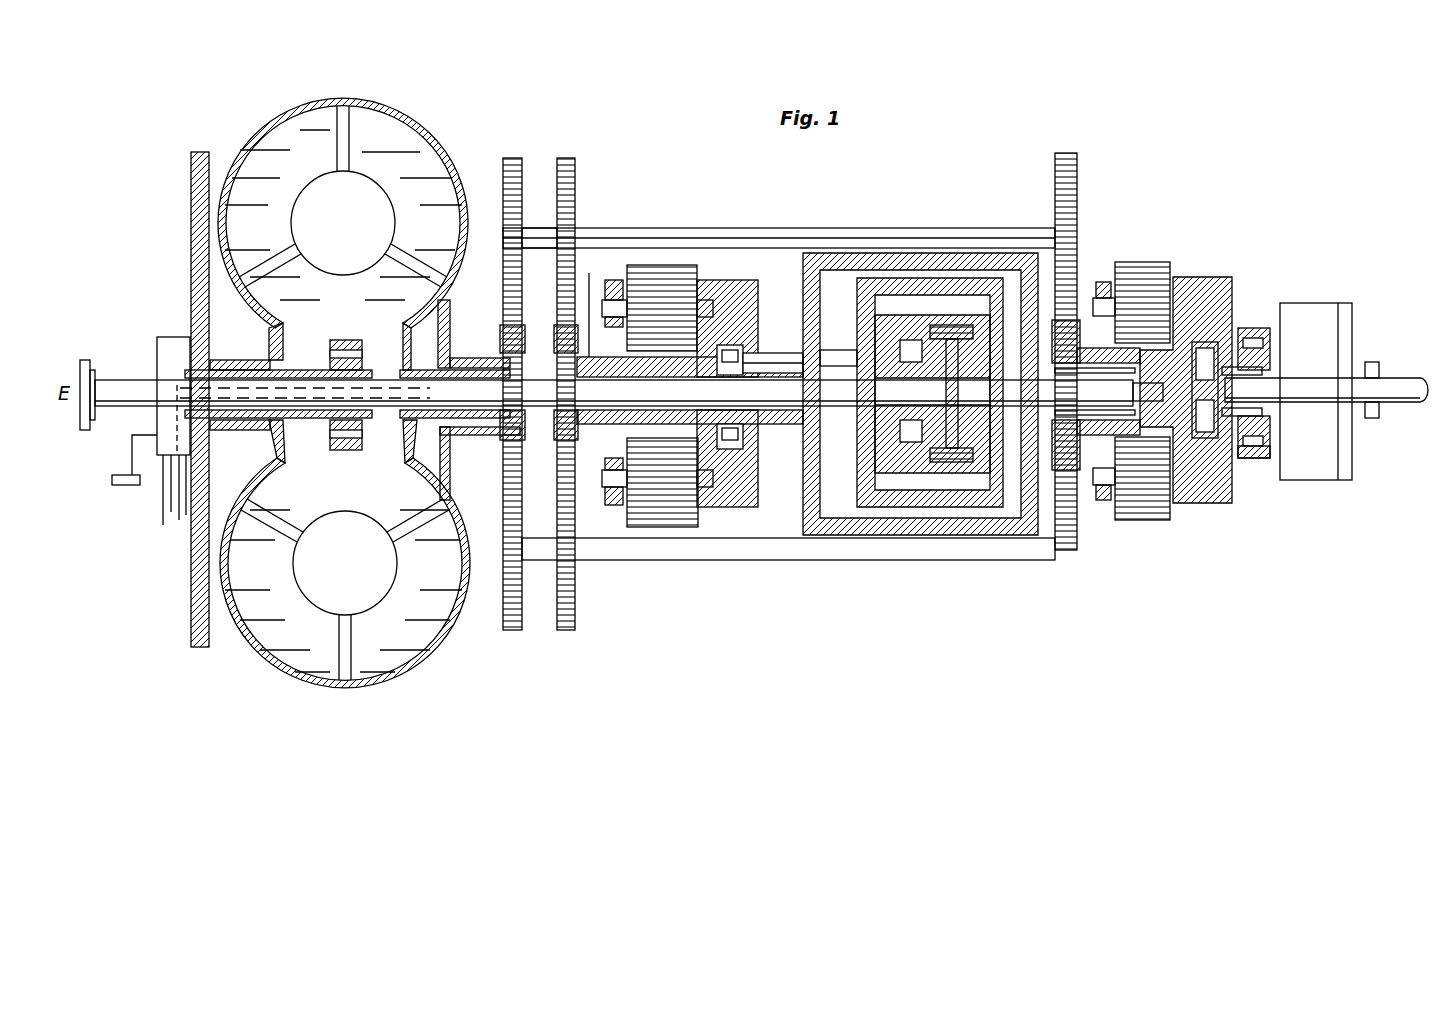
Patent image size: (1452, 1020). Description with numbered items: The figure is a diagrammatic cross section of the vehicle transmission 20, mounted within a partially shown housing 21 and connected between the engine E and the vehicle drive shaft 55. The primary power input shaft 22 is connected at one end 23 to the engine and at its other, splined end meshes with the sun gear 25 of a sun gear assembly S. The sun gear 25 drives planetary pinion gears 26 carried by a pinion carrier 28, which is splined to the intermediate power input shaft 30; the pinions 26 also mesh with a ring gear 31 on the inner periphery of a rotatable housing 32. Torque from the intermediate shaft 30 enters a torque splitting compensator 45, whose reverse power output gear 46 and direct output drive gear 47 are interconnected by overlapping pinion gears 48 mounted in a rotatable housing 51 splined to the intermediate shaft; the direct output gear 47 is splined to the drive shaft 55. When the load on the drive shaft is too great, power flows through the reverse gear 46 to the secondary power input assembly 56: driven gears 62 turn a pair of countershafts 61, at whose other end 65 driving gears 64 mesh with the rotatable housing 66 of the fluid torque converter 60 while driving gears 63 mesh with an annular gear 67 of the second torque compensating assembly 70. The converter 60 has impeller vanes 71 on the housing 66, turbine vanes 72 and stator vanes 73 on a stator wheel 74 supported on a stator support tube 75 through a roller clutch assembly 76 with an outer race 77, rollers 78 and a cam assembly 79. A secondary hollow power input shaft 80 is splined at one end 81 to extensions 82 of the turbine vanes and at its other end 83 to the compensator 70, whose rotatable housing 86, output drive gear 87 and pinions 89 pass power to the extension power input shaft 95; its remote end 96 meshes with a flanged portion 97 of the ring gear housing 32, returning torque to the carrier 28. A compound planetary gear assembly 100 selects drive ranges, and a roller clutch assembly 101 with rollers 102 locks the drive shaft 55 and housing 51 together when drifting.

The transmission 20 is at (798, 598).
The transmission housing 21 is at (193, 612).
The primary power input shaft 22 is at (123, 420).
The end of primary input shaft 23 is at (95, 376).
The sun gear 25 is at (945, 380).
The planetary pinion gears 26 is at (940, 480).
The pinion carrier 28 is at (985, 360).
The intermediate power input shaft 30 is at (1047, 420).
The ring gear 31 is at (958, 515).
The rotatable housing 32 is at (935, 330).
The torque splitting compensator 45 is at (1220, 274).
The reverse power output gear 46 is at (1105, 355).
The direct output drive gear 47 is at (1205, 440).
The pinion gears 48 is at (1142, 262).
The rotatable housing 51 is at (1190, 504).
The vehicle drive shaft 55 is at (1268, 388).
The secondary power input assembly 56 is at (588, 220).
The fluid torque converter 60 is at (347, 192).
The countershafts 61 is at (795, 229).
The driven gears 62 is at (1077, 155).
The driving gears 63 is at (570, 157).
The driving gears 64 is at (515, 157).
The end of countershaft 65 is at (535, 222).
The rotatable housing of torque converter 66 is at (432, 150).
The annular gear 67 is at (597, 304).
The second differential torque compensating assembly 70 is at (767, 288).
The impeller vanes 71 is at (270, 160).
The turbine vanes 72 is at (385, 135).
The stator vanes 73 is at (320, 300).
The stator wheel 74 is at (357, 342).
The stator support tube 75 is at (212, 370).
The roller clutch assembly 76 is at (322, 420).
The outer race 77 is at (268, 445).
The rollers 78 is at (455, 355).
The cam assembly 79 is at (345, 420).
The secondary hollow power input shaft 80 is at (490, 370).
The end of secondary power input shaft 81 is at (408, 452).
The extensions of turbine vanes 82 is at (445, 455).
The end of secondary power input shaft 83 is at (680, 370).
The rotatable housing 86 is at (758, 503).
The output drive gear 87 is at (730, 345).
The pinions 89 is at (672, 528).
The secondary extension power input shaft 95 is at (775, 428).
The remote end of extension power input shaft 96 is at (822, 358).
The flanged portion 97 is at (838, 350).
The compound planetary gear assembly 100 is at (1346, 300).
The roller clutch assembly 101 is at (1248, 327).
The rollers 102 is at (1252, 458).
The sun gear assembly S is at (893, 282).